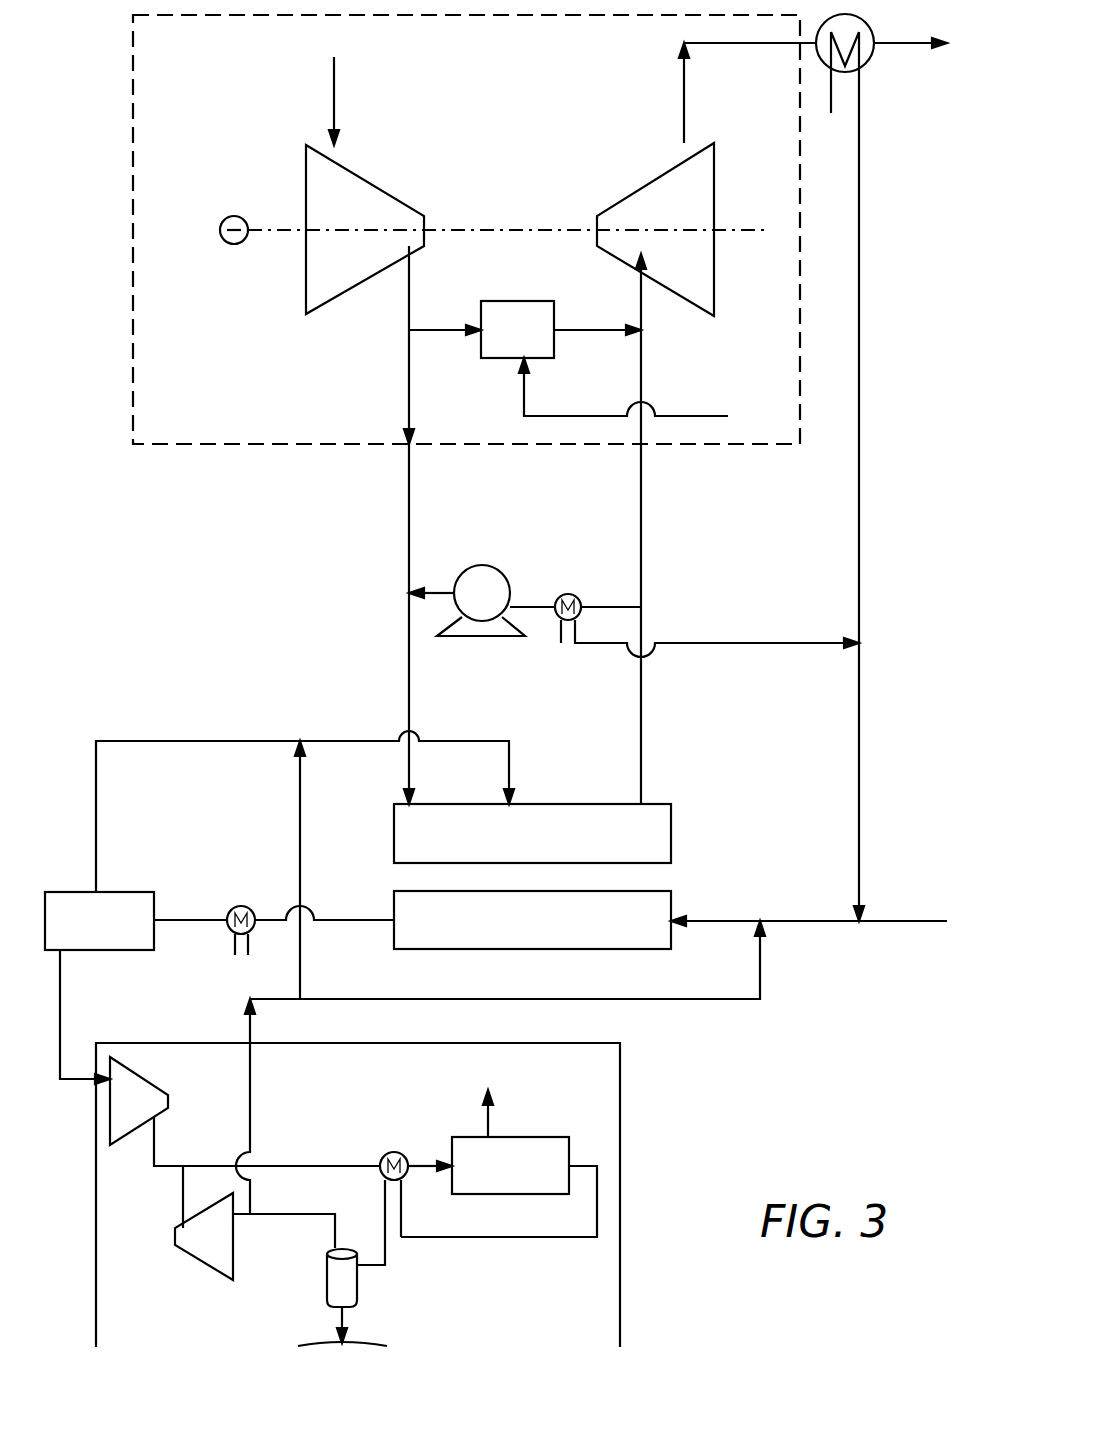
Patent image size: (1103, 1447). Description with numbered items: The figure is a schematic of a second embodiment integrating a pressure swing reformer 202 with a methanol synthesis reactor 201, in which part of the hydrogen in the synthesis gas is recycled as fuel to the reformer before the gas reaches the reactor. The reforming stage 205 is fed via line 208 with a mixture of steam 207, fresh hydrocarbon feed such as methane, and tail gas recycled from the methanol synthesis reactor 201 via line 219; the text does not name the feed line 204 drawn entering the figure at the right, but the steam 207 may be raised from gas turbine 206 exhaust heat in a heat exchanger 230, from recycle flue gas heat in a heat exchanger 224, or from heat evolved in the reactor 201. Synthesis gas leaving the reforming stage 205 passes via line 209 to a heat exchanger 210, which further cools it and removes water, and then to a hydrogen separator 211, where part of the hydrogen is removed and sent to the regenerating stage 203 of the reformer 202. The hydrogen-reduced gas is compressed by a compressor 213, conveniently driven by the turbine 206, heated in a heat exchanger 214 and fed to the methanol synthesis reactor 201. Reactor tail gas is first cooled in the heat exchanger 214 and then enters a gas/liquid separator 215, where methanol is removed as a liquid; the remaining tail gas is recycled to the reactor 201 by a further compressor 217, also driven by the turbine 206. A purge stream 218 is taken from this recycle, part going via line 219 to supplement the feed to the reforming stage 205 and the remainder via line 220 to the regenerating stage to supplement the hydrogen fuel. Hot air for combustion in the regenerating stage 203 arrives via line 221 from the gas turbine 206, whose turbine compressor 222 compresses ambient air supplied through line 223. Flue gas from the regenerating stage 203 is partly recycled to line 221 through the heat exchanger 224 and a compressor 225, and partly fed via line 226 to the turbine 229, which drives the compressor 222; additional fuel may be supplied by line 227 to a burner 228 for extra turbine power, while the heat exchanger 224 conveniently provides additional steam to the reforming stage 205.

The methanol synthesis reactor 201 is at (533, 1174).
The pressure swing reformer 202 is at (372, 833).
The regenerating stage 203 is at (663, 830).
The feed line 204 is at (906, 921).
The reforming stage 205 is at (663, 917).
The gas turbine 206 is at (518, 62).
The steam 207 is at (859, 587).
The line 208 is at (718, 921).
The line 209 is at (335, 920).
The heat exchanger 210 is at (241, 906).
The hydrogen separator 211 is at (150, 919).
The compressor 213 is at (151, 1112).
The heat exchanger 214 is at (386, 1153).
The gas/liquid separator 215 is at (348, 1292).
The further compressor 217 is at (225, 1249).
The purge stream 218 is at (278, 999).
The line 219 is at (725, 999).
The line 220 is at (300, 952).
The line 221 is at (409, 530).
The turbine compressor 222 is at (358, 221).
The line 223 is at (334, 91).
The heat exchanger 224 is at (581, 594).
The compressor 225 is at (481, 565).
The line 226 is at (641, 530).
The line 227 is at (694, 416).
The burner 228 is at (535, 342).
The turbine 229 is at (674, 221).
The heat exchanger 230 is at (862, 18).